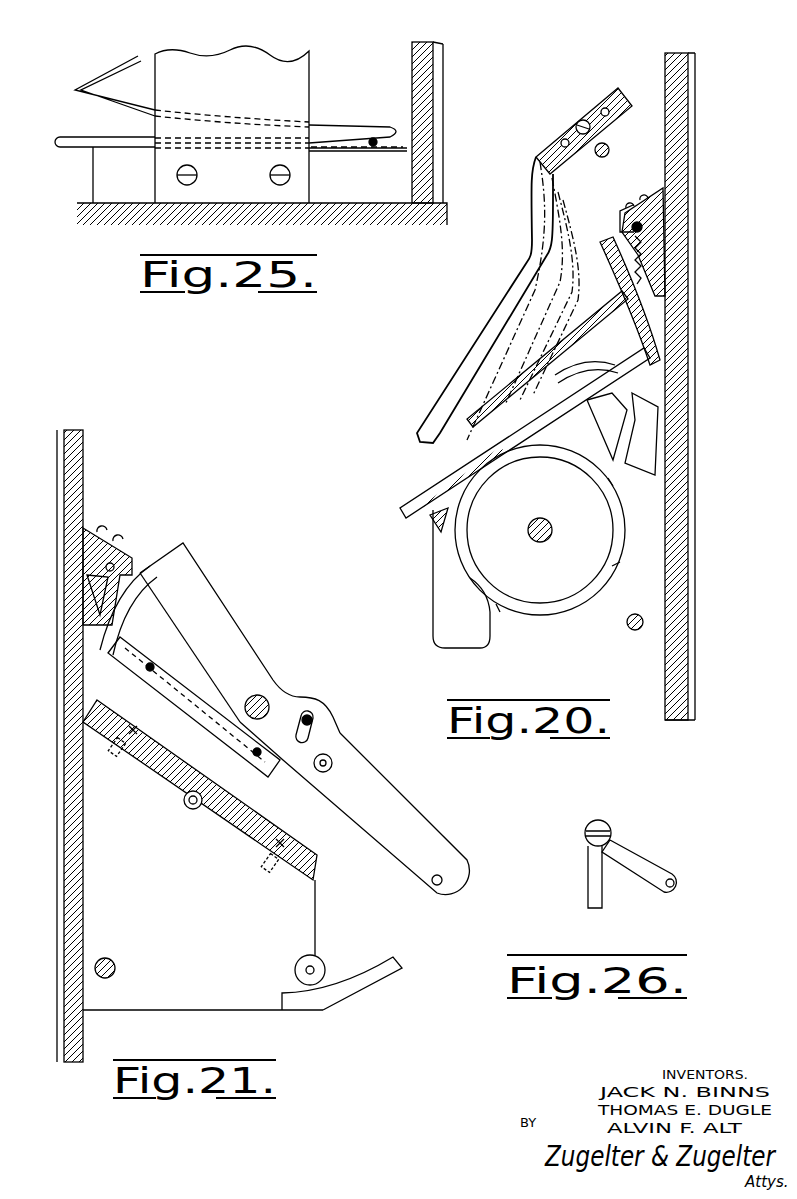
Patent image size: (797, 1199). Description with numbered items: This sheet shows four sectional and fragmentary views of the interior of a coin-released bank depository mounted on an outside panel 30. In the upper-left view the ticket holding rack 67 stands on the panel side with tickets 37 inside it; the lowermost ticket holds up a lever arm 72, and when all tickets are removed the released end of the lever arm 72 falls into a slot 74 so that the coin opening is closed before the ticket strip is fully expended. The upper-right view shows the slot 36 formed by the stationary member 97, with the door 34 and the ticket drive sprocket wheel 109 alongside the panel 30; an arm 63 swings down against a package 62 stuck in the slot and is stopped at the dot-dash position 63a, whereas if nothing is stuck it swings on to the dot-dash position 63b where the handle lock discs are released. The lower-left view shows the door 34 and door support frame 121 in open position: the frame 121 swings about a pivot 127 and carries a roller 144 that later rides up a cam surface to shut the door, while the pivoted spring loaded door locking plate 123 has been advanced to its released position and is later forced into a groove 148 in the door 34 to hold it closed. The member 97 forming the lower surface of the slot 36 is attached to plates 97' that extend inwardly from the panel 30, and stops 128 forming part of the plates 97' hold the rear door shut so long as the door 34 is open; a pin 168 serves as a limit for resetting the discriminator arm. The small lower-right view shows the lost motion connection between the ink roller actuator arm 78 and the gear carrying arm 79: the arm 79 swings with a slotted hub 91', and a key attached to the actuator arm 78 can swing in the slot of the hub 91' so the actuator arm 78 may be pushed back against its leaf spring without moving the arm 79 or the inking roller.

In FIG. 25, the outside panel 30 is at (428, 78).
In FIG. 20, the outside panel 30 is at (670, 57).
In FIG. 21, the outside panel 30 is at (68, 1062).
In FIG. 25, the ticket holding rack 67 is at (246, 42).
In FIG. 25, the tickets 37 is at (327, 127).
In FIG. 25, the lever arm 72 is at (373, 138).
In FIG. 25, the slot 74 is at (370, 152).
In FIG. 20, the arm 63 is at (458, 378).
In FIG. 20, the arm position (stopped by package) 63a is at (462, 455).
In FIG. 20, the arm position (released) 63b is at (510, 478).
In FIG. 20, the package 62 is at (403, 512).
In FIG. 20, the slot 36 is at (560, 380).
In FIG. 21, the slot 36 is at (160, 762).
In FIG. 20, the door 34 is at (657, 317).
In FIG. 21, the door 34 is at (100, 645).
In FIG. 20, the ticket drive sprocket wheel 109 is at (575, 603).
In FIG. 21, the groove 148 is at (172, 572).
In FIG. 21, the door locking plate 123 is at (113, 605).
In FIG. 21, the pivot 127 is at (268, 700).
In FIG. 21, the pin 168 is at (313, 722).
In FIG. 21, the roller 144 is at (325, 771).
In FIG. 21, the door support frame 121 is at (395, 804).
In FIG. 21, the stationary member 97 is at (194, 717).
In FIG. 21, the plates 97' is at (203, 1020).
In FIG. 21, the stops 128 is at (378, 985).
In FIG. 26, the slotted hub 91' is at (618, 818).
In FIG. 26, the arm 79 is at (640, 862).
In FIG. 26, the ink roller actuator arm 78 is at (590, 890).